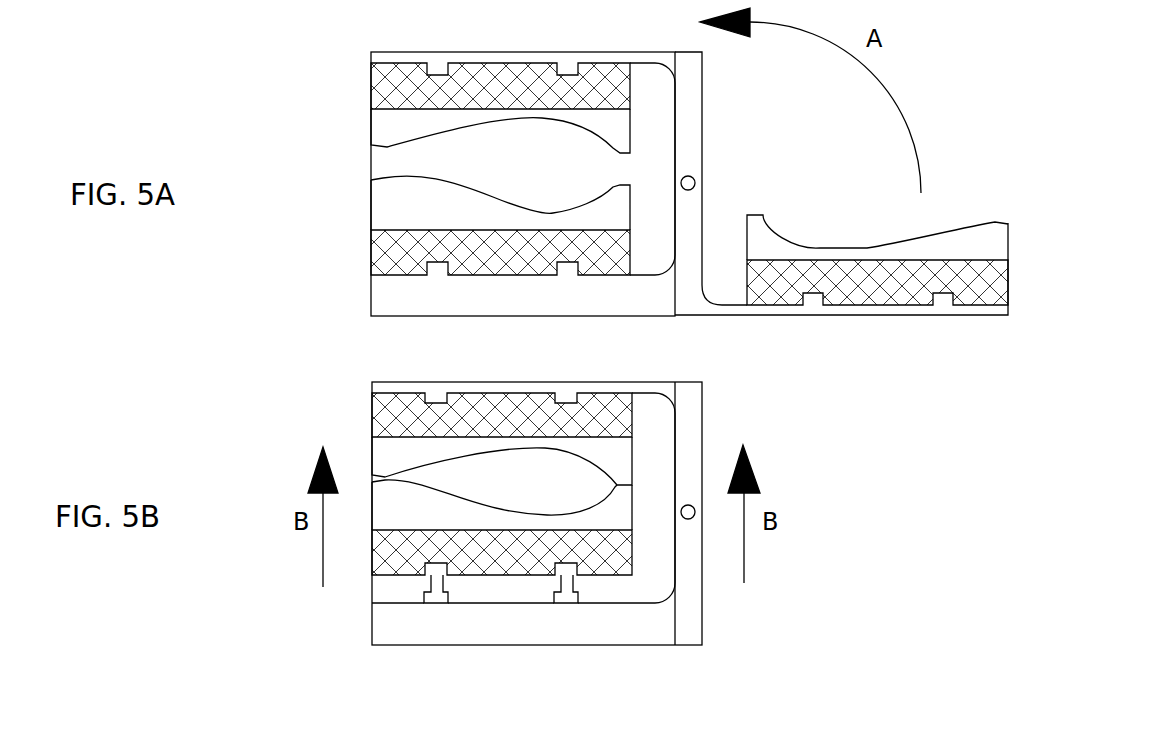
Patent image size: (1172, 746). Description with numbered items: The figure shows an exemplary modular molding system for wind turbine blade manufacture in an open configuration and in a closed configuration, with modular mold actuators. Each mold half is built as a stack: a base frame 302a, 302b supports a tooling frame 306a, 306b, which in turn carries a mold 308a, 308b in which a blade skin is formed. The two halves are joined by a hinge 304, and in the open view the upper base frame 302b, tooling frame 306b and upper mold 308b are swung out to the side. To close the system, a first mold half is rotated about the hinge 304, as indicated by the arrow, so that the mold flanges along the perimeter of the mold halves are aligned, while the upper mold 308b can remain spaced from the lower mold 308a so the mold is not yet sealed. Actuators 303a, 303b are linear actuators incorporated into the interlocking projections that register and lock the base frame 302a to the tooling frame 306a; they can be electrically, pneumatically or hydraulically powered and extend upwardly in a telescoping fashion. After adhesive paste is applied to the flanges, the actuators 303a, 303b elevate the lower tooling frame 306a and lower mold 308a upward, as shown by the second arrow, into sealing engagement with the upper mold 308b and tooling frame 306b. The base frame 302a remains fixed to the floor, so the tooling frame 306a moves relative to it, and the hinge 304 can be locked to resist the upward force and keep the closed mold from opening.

In FIG. 5A, the base frame 302a is at (537, 309).
In FIG. 5B, the base frame 302a is at (537, 634).
In FIG. 5A, the base frame 302b is at (887, 317).
In FIG. 5B, the base frame 302b is at (560, 383).
In FIG. 5B, the actuator 303a is at (428, 576).
In FIG. 5B, the actuator 303b is at (570, 576).
In FIG. 5A, the hinge 304 is at (693, 178).
In FIG. 5B, the hinge 304 is at (688, 512).
In FIG. 5A, the tooling frame 306a is at (372, 248).
In FIG. 5B, the tooling frame 306a is at (373, 560).
In FIG. 5A, the tooling frame 306b is at (1000, 293).
In FIG. 5A, the lower mold 308a is at (373, 205).
In FIG. 5B, the lower mold 308a is at (447, 519).
In FIG. 5A, the upper mold 308b is at (963, 227).
In FIG. 5B, the upper mold 308b is at (373, 458).